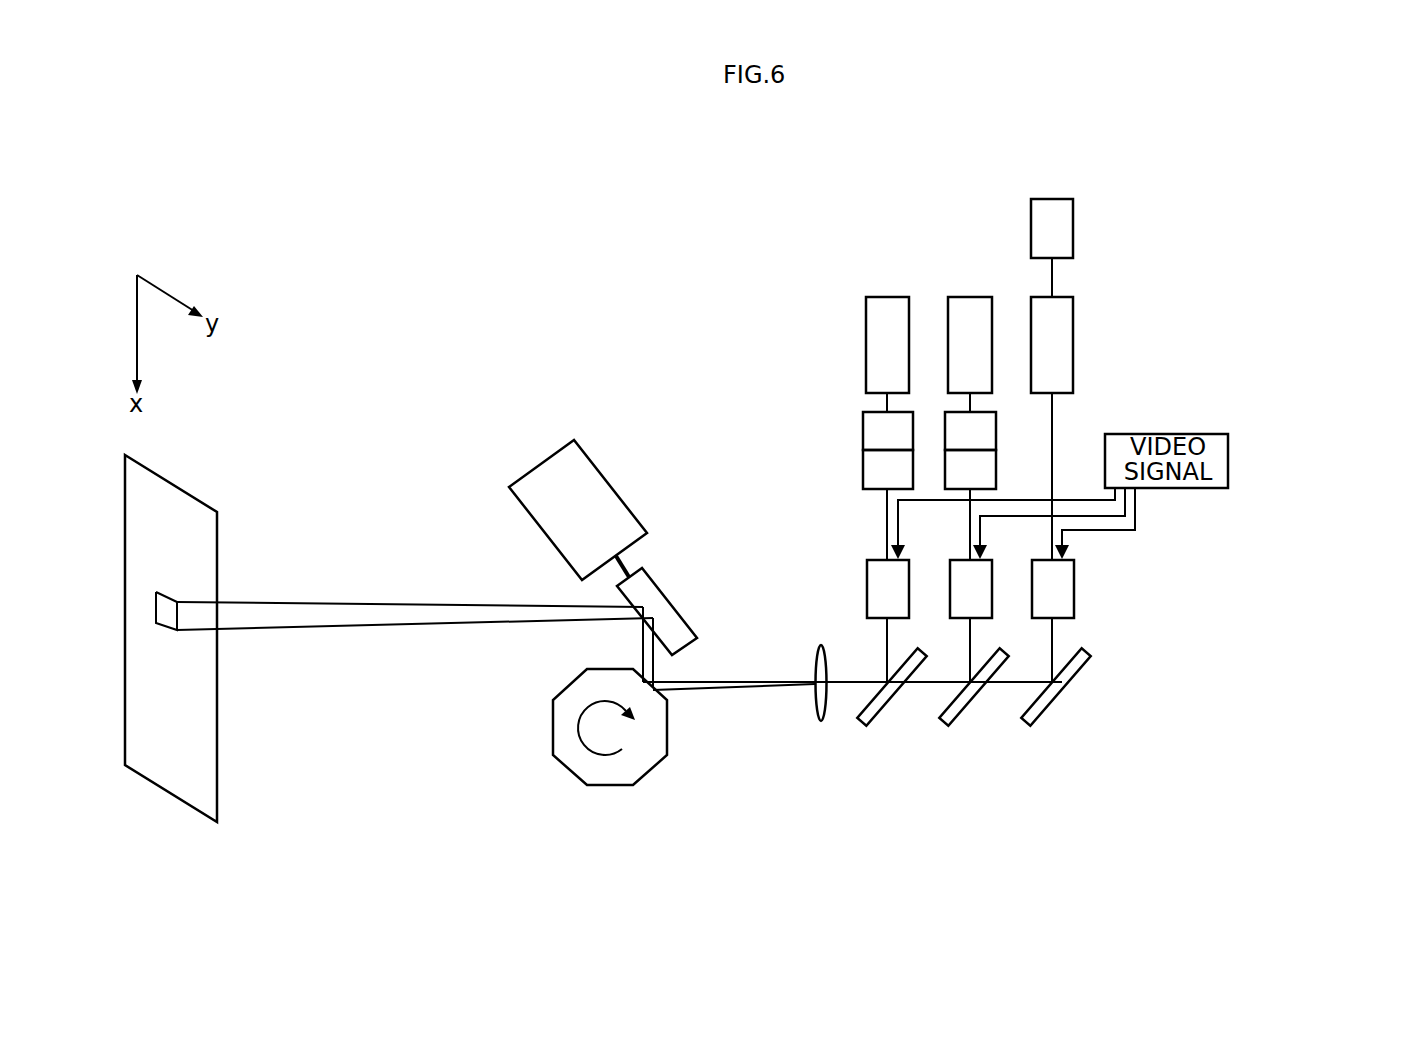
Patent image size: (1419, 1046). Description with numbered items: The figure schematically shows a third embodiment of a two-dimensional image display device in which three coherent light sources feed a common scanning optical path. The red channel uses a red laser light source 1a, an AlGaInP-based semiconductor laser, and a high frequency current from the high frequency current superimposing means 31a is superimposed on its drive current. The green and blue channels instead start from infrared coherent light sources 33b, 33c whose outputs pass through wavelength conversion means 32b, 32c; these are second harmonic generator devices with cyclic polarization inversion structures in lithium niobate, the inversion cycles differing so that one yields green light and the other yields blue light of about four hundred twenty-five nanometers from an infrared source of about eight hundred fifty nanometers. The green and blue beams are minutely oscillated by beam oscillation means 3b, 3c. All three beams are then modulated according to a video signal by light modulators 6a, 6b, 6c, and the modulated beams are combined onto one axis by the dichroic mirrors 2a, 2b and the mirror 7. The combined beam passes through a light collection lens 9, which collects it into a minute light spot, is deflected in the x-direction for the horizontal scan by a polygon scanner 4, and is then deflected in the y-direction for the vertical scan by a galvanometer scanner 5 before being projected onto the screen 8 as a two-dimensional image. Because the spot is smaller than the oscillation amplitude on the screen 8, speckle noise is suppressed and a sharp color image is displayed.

The high frequency current superimposing means 31a is at (1065, 225).
The red laser light source 1a is at (1065, 313).
The wavelength conversion means 32b is at (988, 428).
The beam oscillation means 3b is at (985, 461).
The infrared coherent light source 33b is at (968, 305).
The infrared coherent light source 33c is at (887, 305).
The wavelength conversion means 32c is at (872, 423).
The beam oscillation means 3c is at (868, 470).
The light modulator 6a is at (1063, 570).
The light modulator 6b is at (983, 592).
The light modulator 6c is at (900, 598).
The mirror 7 is at (1065, 690).
The dichroic mirror 2a is at (970, 700).
The dichroic mirror 2b is at (890, 700).
The light collection lens 9 is at (815, 717).
The polygon scanner 4 is at (576, 762).
The galvanometer scanner 5 is at (545, 473).
The screen 8 is at (178, 505).